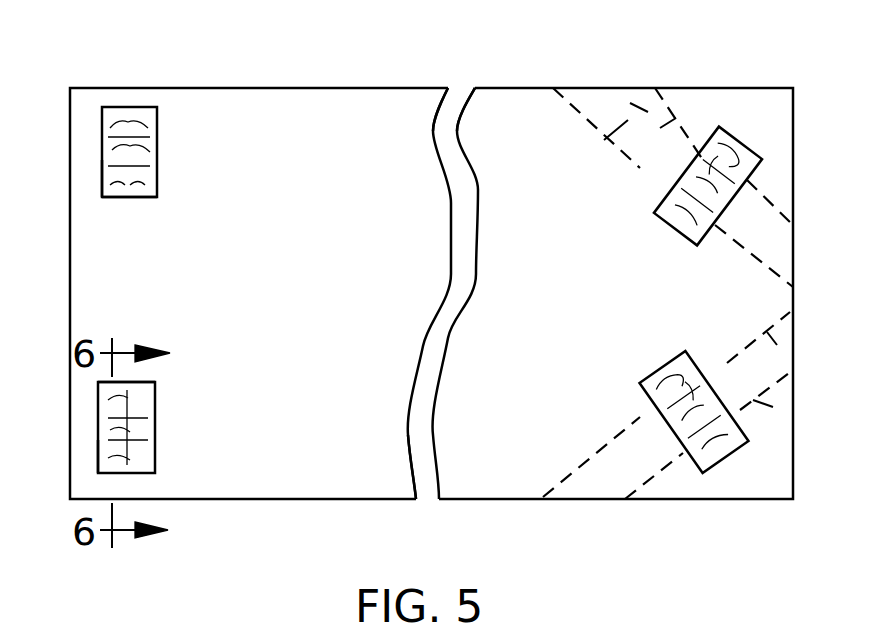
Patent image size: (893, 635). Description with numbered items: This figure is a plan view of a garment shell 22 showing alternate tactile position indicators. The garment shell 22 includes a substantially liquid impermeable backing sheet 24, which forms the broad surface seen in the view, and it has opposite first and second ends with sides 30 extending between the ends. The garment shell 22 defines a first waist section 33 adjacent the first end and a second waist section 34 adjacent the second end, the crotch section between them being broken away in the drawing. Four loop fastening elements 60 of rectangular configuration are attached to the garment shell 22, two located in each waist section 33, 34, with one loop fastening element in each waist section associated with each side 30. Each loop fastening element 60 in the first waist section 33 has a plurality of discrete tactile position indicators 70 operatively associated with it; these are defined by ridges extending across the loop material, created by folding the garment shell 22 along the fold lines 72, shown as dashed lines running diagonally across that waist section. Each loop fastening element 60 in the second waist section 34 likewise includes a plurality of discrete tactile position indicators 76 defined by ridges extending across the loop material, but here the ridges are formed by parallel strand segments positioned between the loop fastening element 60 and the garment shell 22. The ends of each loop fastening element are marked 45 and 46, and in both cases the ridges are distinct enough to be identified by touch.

The garment shell 22 is at (352, 72).
The backing sheet 24 is at (352, 292).
The sides 30 is at (488, 88).
The first waist section 33 is at (598, 560).
The second waist section 34 is at (232, 547).
The first end of label 45 is at (117, 197).
The second end of label 46 is at (102, 176).
The loop fastening element 60 is at (127, 107).
The tactile position indicators 70 is at (682, 198).
The fold lines 72 is at (667, 123).
The tactile position indicators 76 is at (140, 158).